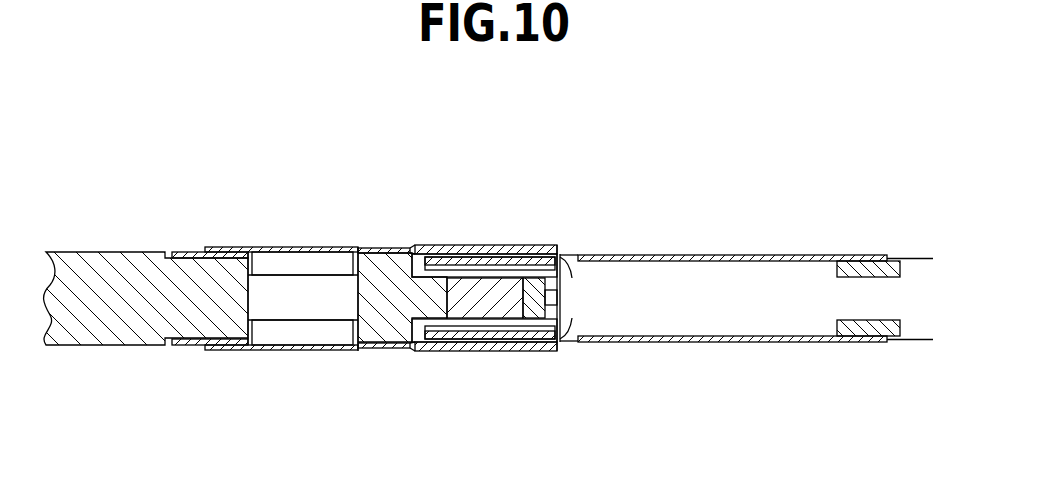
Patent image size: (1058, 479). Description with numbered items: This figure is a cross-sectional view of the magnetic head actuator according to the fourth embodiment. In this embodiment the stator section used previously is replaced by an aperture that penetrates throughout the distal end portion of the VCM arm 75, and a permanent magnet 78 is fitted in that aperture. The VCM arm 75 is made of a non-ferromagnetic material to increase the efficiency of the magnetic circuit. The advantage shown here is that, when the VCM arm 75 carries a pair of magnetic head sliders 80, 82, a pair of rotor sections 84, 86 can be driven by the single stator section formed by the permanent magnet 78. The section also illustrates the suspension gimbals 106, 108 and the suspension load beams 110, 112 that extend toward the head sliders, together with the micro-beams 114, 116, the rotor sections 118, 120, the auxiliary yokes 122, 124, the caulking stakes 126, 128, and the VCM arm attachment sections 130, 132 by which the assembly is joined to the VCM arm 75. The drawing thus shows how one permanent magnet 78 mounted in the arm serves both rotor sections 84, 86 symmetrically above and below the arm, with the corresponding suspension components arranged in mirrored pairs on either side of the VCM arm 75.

The VCM arm 75 is at (103, 278).
The permanent magnet 78 is at (499, 292).
The magnetic head slider 80 is at (861, 268).
The magnetic head slider 82 is at (851, 332).
The rotor section 84 is at (476, 262).
The rotor section 86 is at (489, 335).
The suspension gimbal 106 is at (918, 258).
The suspension gimbal 108 is at (915, 342).
The suspension load beam 110 is at (705, 255).
The suspension load beam 112 is at (690, 342).
The micro-beam 114 is at (559, 292).
The micro-beam 116 is at (570, 344).
The rotor section 118 is at (549, 256).
The rotor section 120 is at (548, 343).
The auxiliary yoke 122 is at (432, 248).
The auxiliary yoke 124 is at (427, 351).
The caulking stake 126 is at (295, 262).
The caulking stake 128 is at (288, 336).
The VCM arm attachment section 130 is at (190, 250).
The VCM arm attachment section 132 is at (176, 346).